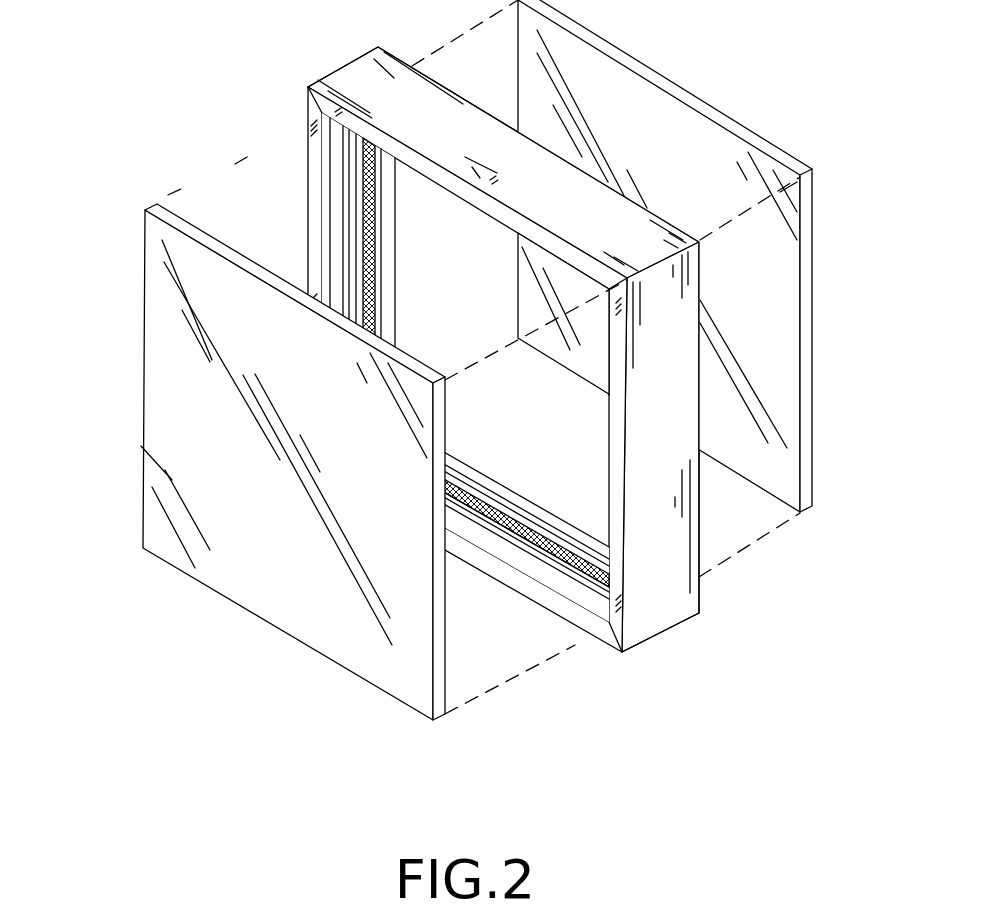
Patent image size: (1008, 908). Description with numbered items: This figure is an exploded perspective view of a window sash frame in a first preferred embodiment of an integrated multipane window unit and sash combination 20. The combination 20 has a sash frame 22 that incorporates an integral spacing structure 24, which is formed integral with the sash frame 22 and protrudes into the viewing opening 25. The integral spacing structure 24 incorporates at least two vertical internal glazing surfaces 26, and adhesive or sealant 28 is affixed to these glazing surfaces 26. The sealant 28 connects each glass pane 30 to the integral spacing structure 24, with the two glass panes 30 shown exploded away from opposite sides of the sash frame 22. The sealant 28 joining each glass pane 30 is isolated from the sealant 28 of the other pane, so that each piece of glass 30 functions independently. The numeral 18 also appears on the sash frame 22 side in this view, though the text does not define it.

The sash frame side 18 is at (688, 430).
The integrated multipane window unit and sash combination 20 is at (546, 678).
The sash frame 22 is at (667, 585).
The integral spacing structure 24 is at (346, 163).
The viewing opening 25 is at (198, 462).
The vertical internal glazing surfaces 26 is at (365, 232).
The sealant 28 is at (353, 240).
The glass pane 30 is at (752, 130).